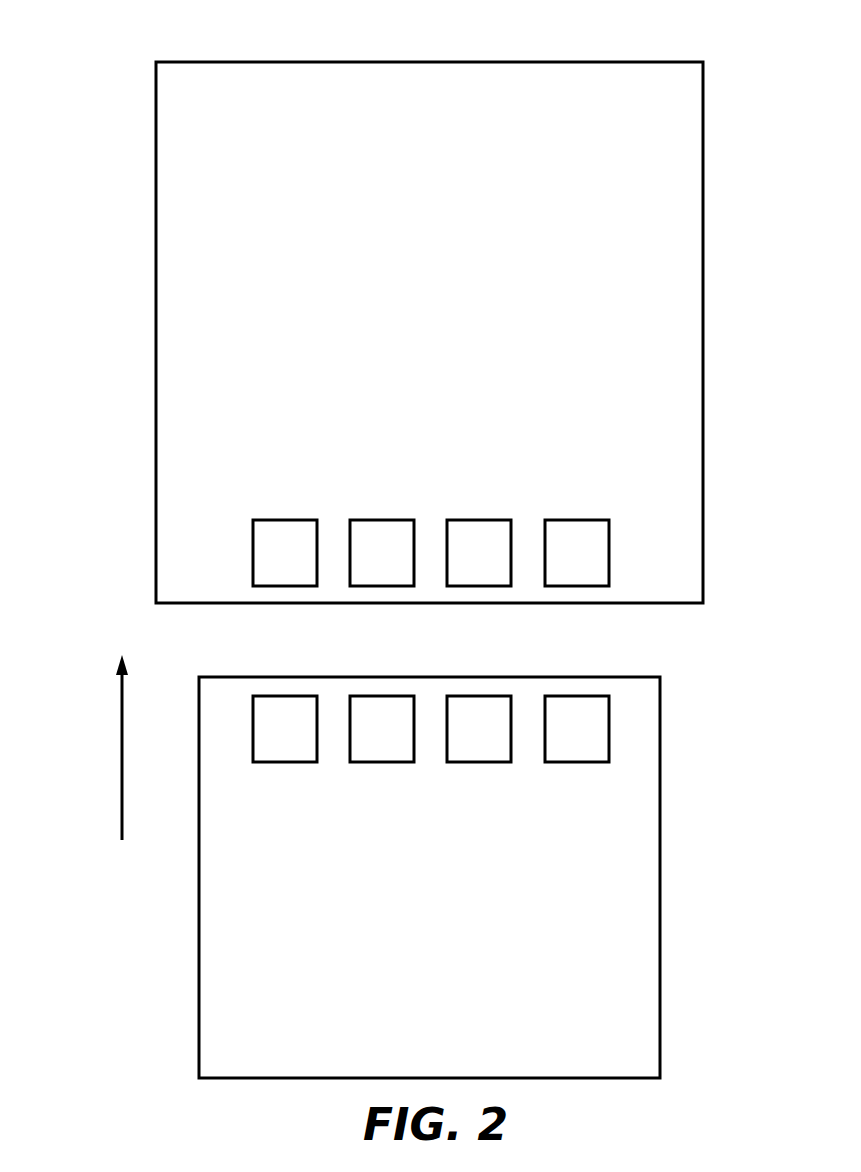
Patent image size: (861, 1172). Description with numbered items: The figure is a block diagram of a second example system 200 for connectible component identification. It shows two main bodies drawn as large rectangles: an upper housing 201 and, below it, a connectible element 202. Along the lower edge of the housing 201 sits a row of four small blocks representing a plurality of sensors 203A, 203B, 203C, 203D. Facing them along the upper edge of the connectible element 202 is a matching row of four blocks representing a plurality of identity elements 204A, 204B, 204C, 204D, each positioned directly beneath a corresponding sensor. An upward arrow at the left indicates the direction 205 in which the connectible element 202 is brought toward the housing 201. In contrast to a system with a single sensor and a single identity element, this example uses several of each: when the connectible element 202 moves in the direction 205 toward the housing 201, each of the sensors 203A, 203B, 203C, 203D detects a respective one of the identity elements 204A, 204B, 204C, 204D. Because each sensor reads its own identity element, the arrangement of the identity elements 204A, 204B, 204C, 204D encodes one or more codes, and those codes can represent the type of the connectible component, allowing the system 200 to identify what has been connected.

The system 200 is at (114, 48).
The housing 201 is at (705, 540).
The connectible element 202 is at (662, 781).
The sensor 203A is at (288, 587).
The sensor 203B is at (385, 587).
The sensor 203C is at (483, 587).
The sensor 203D is at (582, 587).
The identity element 204A is at (288, 696).
The identity element 204B is at (385, 696).
The identity element 204C is at (483, 696).
The identity element 204D is at (582, 696).
The direction 205 is at (120, 745).